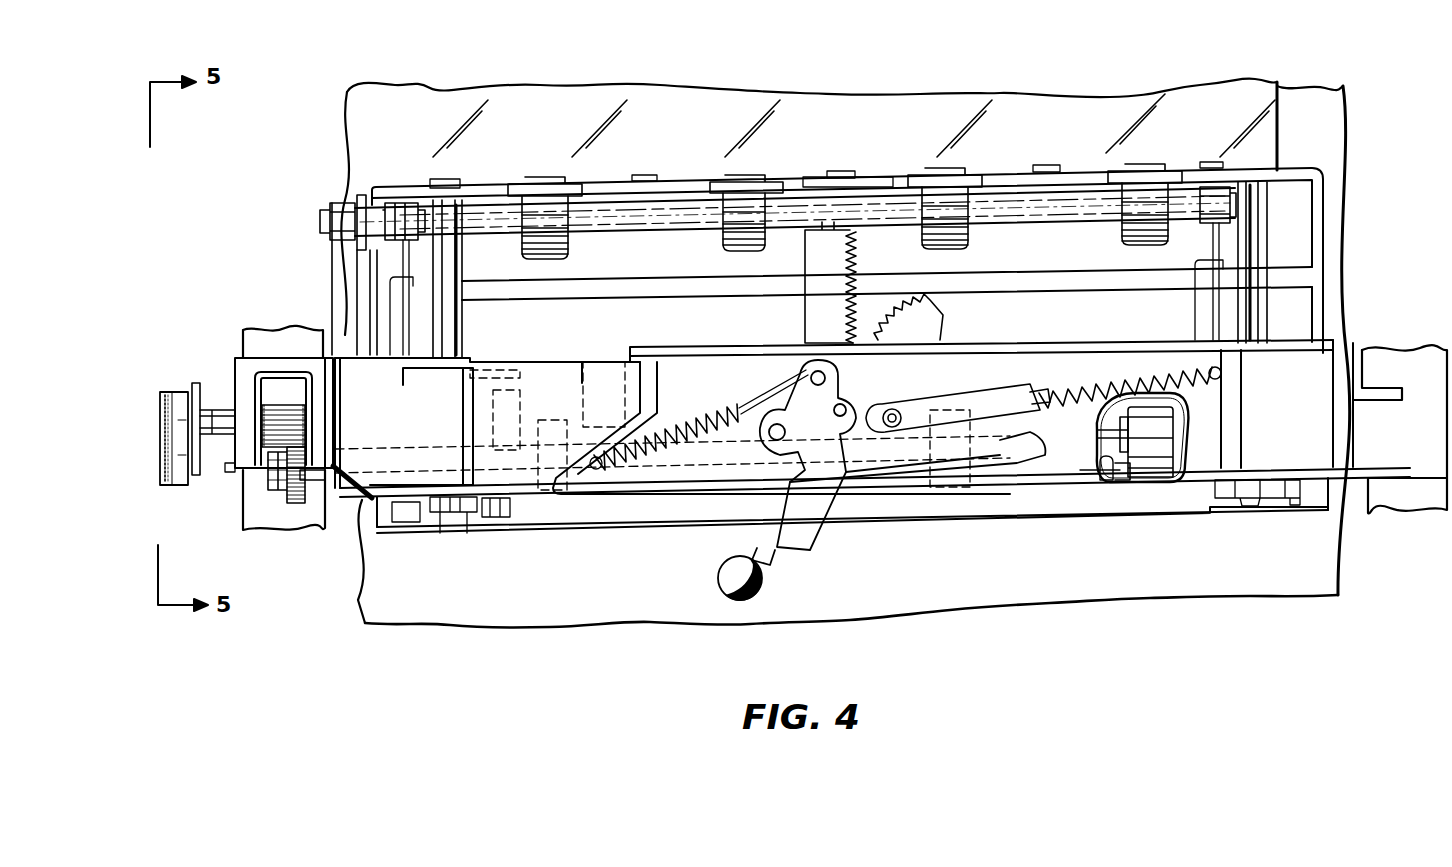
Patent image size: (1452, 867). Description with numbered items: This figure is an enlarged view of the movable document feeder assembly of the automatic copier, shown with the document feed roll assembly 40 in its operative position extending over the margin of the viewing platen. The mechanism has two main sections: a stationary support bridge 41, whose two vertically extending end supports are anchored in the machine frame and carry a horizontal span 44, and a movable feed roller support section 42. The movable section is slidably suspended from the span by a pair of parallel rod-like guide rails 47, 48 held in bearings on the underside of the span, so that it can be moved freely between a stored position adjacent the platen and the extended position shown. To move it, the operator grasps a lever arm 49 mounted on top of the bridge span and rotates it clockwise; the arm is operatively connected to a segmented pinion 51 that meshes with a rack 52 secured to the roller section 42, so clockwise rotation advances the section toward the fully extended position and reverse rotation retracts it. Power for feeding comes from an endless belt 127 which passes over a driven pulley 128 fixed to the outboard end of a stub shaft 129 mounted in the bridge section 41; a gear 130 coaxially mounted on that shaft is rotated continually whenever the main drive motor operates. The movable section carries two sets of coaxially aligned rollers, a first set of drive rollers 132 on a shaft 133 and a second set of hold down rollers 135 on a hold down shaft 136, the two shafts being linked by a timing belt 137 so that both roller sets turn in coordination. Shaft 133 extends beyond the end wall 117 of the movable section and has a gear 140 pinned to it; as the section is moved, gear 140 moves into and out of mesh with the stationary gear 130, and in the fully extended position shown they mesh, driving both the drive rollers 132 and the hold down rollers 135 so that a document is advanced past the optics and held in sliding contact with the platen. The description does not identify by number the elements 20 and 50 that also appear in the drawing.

The panel 20 is at (876, 98).
The document feed roll assembly 40 is at (252, 286).
The stationary support bridge 41 is at (362, 506).
The movable feed roller support section 42 is at (385, 147).
The horizontal span 44 is at (545, 368).
The guide rail 47 is at (457, 278).
The guide rail 48 is at (1258, 263).
The lever arm 49 is at (762, 570).
The slide member 50 is at (511, 406).
The segmented pinion 51 is at (942, 330).
The rack 52 is at (857, 250).
The end wall 117 is at (373, 278).
The endless belt 127 is at (172, 478).
The driven pulley 128 is at (175, 454).
The stub shaft 129 is at (213, 418).
The gear 130 is at (291, 405).
The drive rollers 132 is at (1152, 482).
The shaft 133 is at (314, 472).
The hold down rollers 135 is at (548, 183).
The hold down shaft 136 is at (658, 210).
The timing belt 137 is at (351, 200).
The gear 140 is at (298, 506).